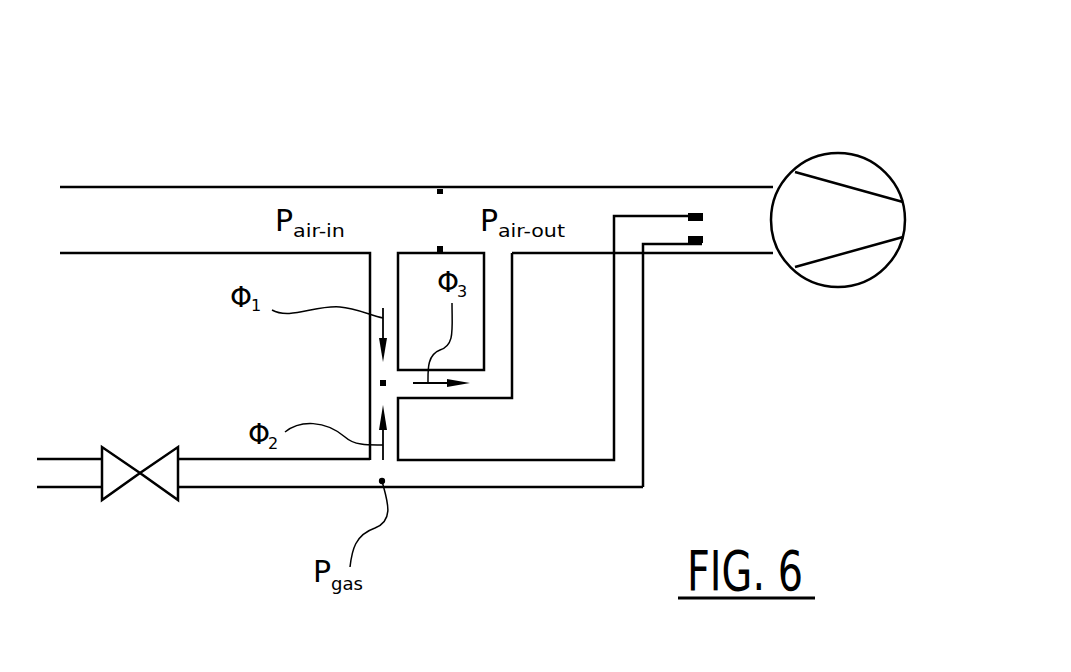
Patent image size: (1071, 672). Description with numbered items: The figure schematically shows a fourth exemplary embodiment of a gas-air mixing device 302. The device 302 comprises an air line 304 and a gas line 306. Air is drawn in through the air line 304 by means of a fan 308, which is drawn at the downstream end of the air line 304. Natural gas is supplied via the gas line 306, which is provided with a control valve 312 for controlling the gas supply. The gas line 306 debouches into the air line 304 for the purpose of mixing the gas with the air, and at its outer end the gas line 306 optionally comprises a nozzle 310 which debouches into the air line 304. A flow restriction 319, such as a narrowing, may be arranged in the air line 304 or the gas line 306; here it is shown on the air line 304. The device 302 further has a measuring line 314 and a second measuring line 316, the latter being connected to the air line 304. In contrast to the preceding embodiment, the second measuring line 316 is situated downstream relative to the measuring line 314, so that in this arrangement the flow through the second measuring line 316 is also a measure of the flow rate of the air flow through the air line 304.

The device 302 is at (549, 150).
The air line 304 is at (232, 187).
The gas line 306 is at (508, 487).
The fan 308 is at (853, 157).
The nozzle 310 is at (698, 212).
The control valve 312 is at (115, 487).
The measuring line 314 is at (322, 378).
The second measuring line 316 is at (512, 372).
The flow restriction 319 is at (440, 188).